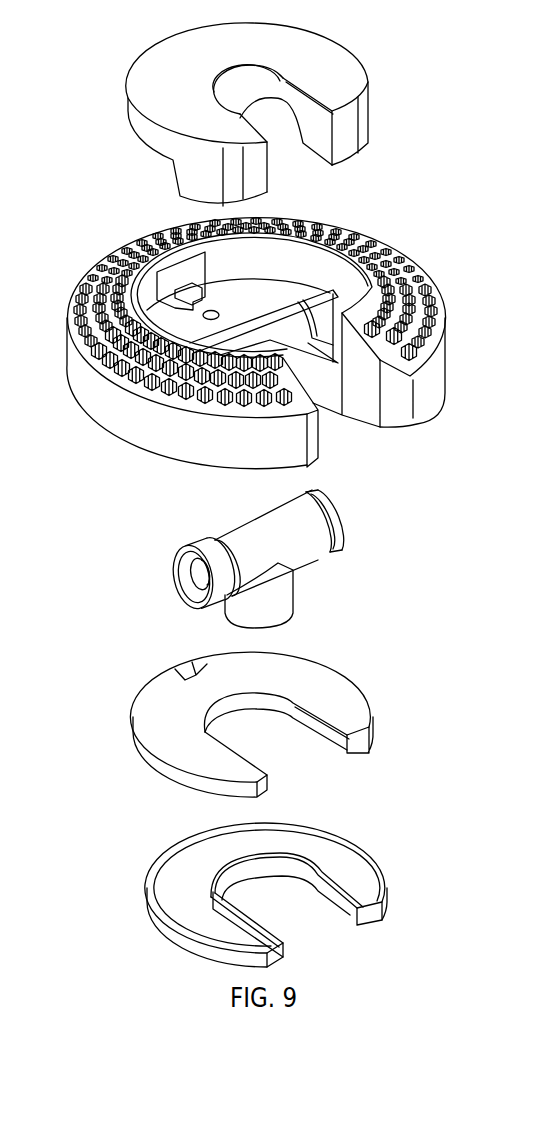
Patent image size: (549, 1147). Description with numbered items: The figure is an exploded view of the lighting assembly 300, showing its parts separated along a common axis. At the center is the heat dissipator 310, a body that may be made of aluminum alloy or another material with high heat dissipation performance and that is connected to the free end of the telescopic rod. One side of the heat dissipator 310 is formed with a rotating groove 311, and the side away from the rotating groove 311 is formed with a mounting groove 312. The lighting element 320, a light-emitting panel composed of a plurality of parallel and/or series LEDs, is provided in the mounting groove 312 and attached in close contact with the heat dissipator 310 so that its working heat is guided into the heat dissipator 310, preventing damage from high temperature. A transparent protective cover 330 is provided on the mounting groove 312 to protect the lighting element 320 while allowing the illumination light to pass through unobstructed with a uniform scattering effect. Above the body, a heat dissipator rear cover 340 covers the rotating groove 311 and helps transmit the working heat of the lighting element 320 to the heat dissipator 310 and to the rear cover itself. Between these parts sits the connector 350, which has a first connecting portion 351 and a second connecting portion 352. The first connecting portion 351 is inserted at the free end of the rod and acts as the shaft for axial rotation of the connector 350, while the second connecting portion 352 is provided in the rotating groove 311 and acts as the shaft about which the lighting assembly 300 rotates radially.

The lighting assembly 300 is at (94, 97).
The heat dissipator 310 is at (427, 407).
The rotating groove 311 is at (287, 325).
The mounting groove 312 is at (327, 440).
The lighting element 320 is at (360, 710).
The transparent protective cover 330 is at (378, 860).
The heat dissipator rear cover 340 is at (337, 57).
The connector 350 is at (403, 507).
The first connecting portion 351 is at (293, 605).
The second connecting portion 352 is at (343, 523).